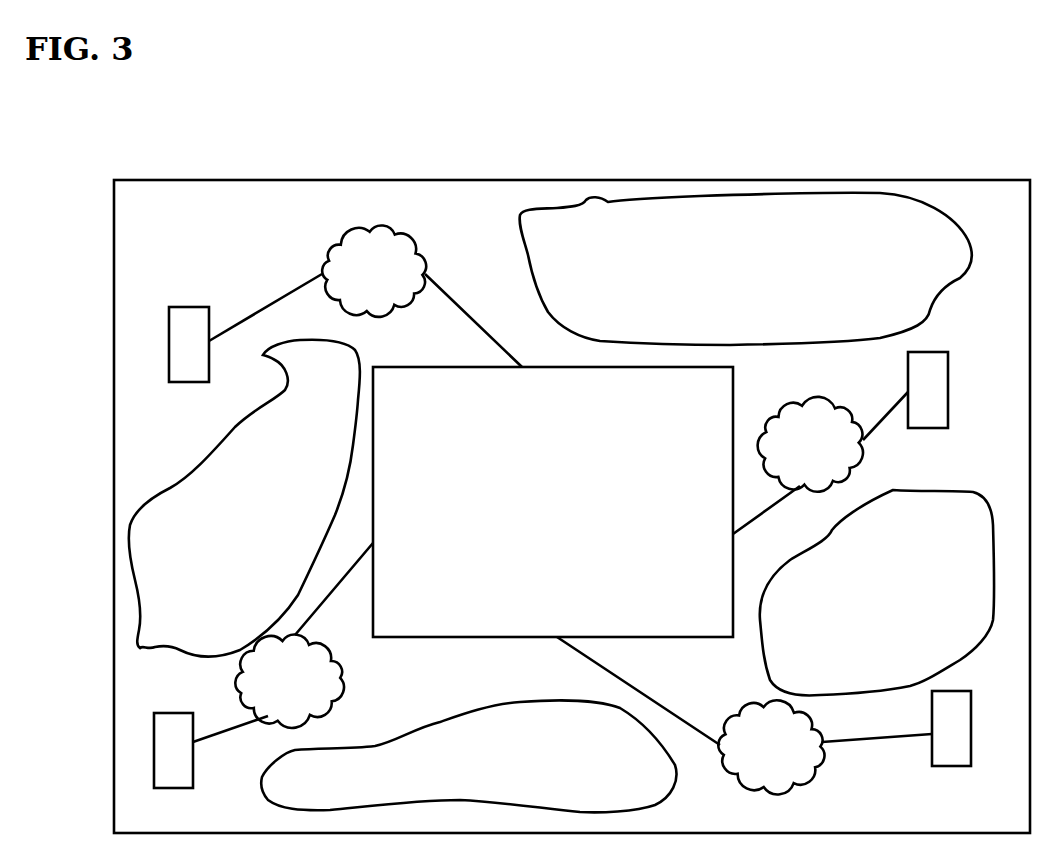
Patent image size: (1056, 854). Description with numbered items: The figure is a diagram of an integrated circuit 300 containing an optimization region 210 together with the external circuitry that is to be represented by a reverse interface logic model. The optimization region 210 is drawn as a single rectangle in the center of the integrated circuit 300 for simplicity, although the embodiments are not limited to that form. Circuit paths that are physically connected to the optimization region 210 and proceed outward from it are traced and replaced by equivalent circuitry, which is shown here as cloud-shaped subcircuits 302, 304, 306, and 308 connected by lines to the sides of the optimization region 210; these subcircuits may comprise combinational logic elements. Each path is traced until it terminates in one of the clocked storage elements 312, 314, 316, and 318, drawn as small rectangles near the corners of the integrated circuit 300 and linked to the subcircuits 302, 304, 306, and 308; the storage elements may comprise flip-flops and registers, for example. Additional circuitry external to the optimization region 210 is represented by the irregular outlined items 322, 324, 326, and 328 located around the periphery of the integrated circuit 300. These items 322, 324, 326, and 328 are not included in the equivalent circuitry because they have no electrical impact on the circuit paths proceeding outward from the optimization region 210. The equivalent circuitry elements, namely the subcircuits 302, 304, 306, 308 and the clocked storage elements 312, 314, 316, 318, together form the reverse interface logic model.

The integrated circuit 300 is at (603, 158).
The optimization region 210 is at (395, 367).
The subcircuit 302 is at (338, 240).
The subcircuit 304 is at (783, 412).
The subcircuit 306 is at (822, 742).
The subcircuit 308 is at (341, 680).
The clocked storage element 312 is at (184, 307).
The clocked storage element 314 is at (930, 352).
The clocked storage element 316 is at (947, 691).
The clocked storage element 318 is at (165, 713).
The additional circuitry item 322 is at (148, 585).
The additional circuitry item 324 is at (665, 343).
The additional circuitry item 326 is at (830, 694).
The additional circuitry item 328 is at (363, 800).